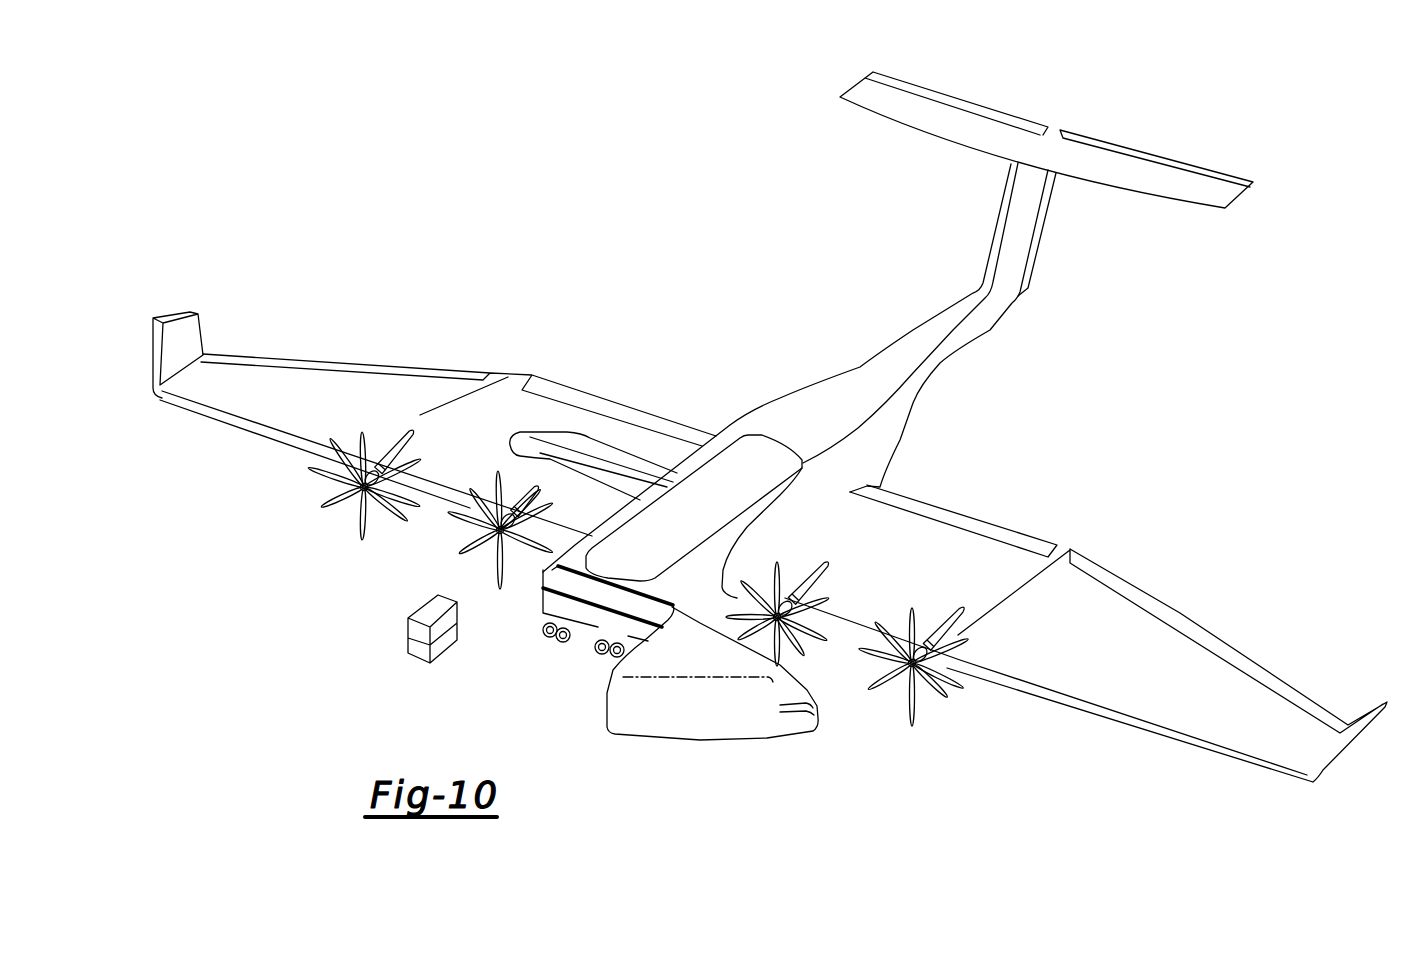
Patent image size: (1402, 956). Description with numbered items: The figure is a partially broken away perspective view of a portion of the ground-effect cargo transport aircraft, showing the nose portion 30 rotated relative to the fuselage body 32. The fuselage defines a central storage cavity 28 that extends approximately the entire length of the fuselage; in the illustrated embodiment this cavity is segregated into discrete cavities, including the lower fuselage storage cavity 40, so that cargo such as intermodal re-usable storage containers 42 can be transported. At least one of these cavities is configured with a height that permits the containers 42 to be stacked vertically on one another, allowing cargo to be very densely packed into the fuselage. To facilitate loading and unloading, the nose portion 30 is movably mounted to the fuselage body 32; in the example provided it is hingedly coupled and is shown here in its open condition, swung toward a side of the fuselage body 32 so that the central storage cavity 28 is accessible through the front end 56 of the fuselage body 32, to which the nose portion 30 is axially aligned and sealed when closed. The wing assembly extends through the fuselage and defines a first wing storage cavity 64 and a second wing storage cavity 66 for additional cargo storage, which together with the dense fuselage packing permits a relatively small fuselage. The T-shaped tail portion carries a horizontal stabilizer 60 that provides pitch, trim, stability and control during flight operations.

The central storage cavity 28 is at (612, 618).
The nose portion 30 is at (628, 734).
The fuselage body 32 is at (860, 453).
The lower fuselage storage cavity 40 is at (560, 614).
The intermodal re-usable storage container 42 is at (408, 653).
The front end 56 is at (545, 583).
The horizontal stabilizer 60 is at (1143, 150).
The first wing storage cavity 64 is at (623, 467).
The second wing storage cavity 66 is at (924, 559).